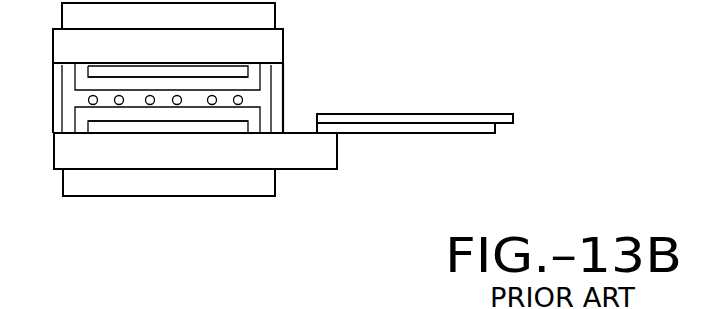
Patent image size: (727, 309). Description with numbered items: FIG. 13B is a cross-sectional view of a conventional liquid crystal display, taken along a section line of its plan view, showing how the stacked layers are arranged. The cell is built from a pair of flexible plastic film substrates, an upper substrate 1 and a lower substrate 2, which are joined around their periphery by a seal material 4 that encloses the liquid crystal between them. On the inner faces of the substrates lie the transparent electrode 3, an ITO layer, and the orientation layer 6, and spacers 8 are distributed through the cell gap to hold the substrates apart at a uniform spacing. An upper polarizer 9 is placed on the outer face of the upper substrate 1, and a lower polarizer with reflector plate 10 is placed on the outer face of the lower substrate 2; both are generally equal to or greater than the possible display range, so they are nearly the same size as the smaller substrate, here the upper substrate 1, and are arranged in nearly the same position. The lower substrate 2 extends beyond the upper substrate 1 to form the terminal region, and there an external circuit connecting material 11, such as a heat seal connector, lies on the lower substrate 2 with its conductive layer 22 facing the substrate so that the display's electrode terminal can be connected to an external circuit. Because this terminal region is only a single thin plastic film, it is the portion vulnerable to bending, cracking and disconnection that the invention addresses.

The upper polarizer 9 is at (267, 15).
The upper substrate 1 is at (275, 48).
The seal material 4 is at (278, 88).
The transparent electrode 3 is at (124, 128).
The spacer 8 is at (177, 105).
The orientation layer 6 is at (225, 113).
The lower substrate 2 is at (327, 155).
The lower polarizer with reflector plate 10 is at (275, 187).
The external circuit connecting material 11 is at (466, 113).
The conductive layer 22 is at (471, 133).